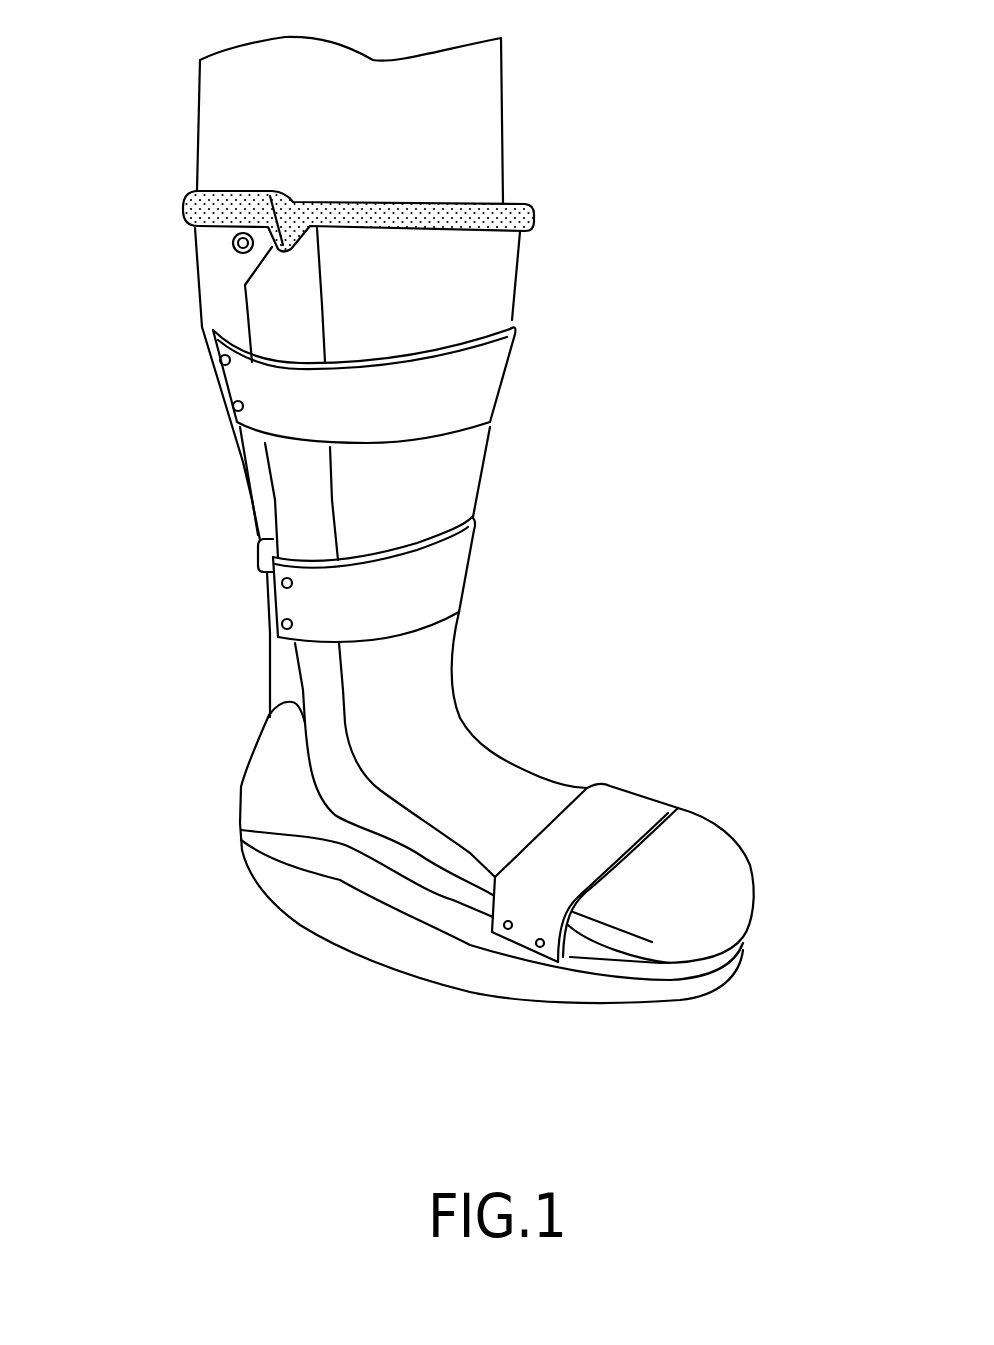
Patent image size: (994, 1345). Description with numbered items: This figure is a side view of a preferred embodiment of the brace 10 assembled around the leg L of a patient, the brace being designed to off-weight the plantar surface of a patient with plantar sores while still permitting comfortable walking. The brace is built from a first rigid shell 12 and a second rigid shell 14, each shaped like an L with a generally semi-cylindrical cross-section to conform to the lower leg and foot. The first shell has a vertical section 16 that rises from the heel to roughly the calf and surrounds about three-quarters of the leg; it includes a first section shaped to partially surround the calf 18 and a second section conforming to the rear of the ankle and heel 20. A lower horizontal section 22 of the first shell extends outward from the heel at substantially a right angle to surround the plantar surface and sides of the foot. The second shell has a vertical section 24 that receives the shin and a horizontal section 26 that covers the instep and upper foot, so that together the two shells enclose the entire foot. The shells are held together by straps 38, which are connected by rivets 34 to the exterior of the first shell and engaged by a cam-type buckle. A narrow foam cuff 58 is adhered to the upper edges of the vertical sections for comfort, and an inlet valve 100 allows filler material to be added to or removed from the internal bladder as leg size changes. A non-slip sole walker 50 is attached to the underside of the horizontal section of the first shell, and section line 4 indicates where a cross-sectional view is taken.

The leg L is at (477, 58).
The section line 4- 4 is at (210, 212).
The brace 10 is at (713, 320).
The first rigid shell 12 is at (232, 466).
The second rigid shell 14 is at (530, 273).
The vertical section 16 is at (268, 523).
The calf 18 is at (205, 327).
The heel 20 is at (270, 718).
The horizontal section 22 is at (340, 862).
The vertical section 24 is at (462, 462).
The horizontal section 26 is at (493, 775).
The rivets 34 is at (232, 406).
The straps 38 is at (490, 382).
The sole walker 50 is at (399, 963).
The foam cuff 58 is at (531, 219).
The inlet valve 100 is at (236, 254).